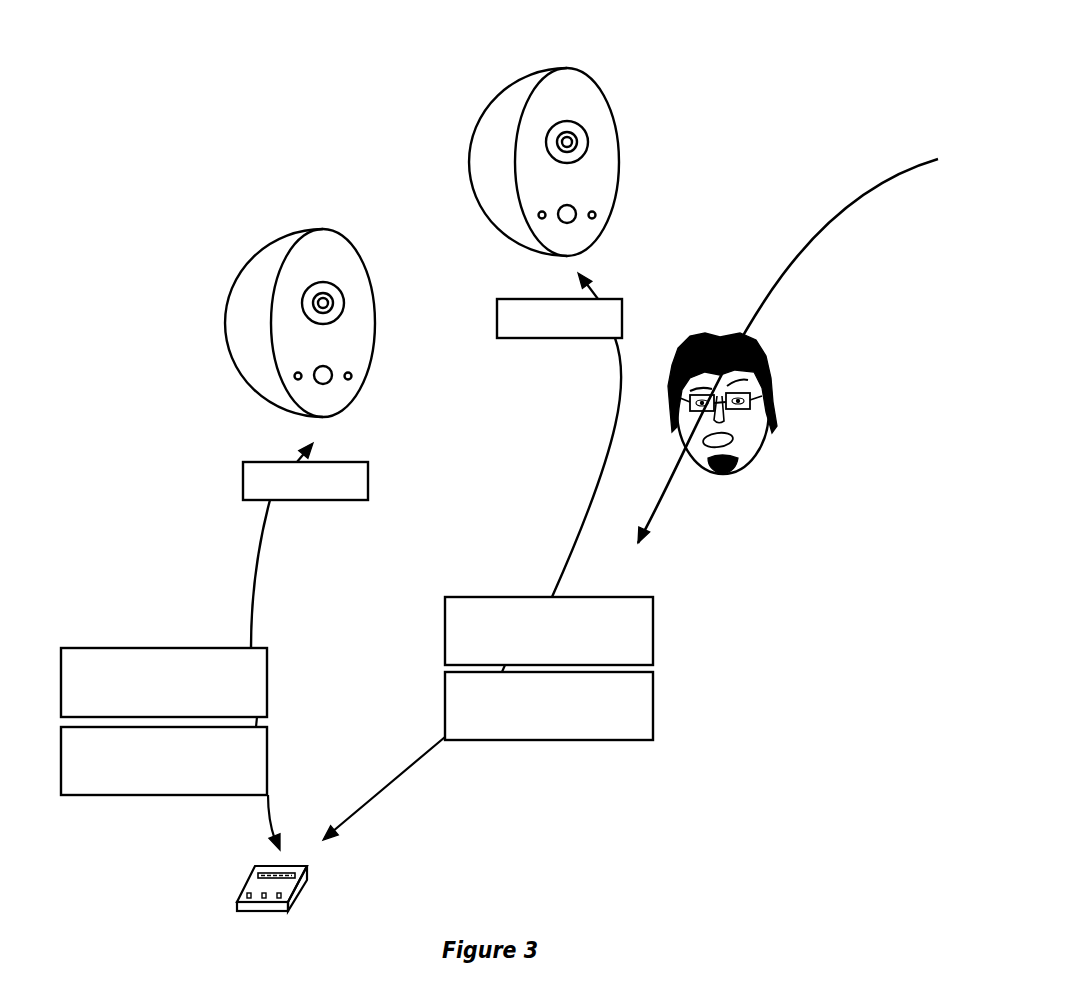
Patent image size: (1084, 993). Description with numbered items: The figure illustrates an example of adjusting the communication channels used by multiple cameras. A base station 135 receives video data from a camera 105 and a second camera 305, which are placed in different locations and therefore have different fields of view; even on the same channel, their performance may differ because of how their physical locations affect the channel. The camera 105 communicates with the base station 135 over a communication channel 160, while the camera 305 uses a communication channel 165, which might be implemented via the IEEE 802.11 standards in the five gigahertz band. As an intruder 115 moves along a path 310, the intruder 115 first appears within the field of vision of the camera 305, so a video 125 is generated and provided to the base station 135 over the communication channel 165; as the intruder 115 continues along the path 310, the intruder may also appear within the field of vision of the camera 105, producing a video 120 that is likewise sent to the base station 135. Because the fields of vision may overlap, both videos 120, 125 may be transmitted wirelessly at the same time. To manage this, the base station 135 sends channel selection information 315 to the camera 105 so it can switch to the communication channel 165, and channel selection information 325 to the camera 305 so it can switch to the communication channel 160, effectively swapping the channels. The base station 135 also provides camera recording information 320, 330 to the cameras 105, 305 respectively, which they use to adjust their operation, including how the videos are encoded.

The camera 105 is at (275, 238).
The camera 305 is at (518, 78).
The path 310 is at (890, 171).
The intruder 115 is at (786, 340).
The video 120 is at (305, 471).
The video 125 is at (559, 305).
The communication channel 160 is at (251, 603).
The communication channel 165 is at (585, 537).
The channel selection information 315 is at (164, 687).
The camera recording information 320 is at (170, 788).
The channel selection information 325 is at (549, 634).
The camera recording information 330 is at (488, 756).
The base station 135 is at (238, 898).